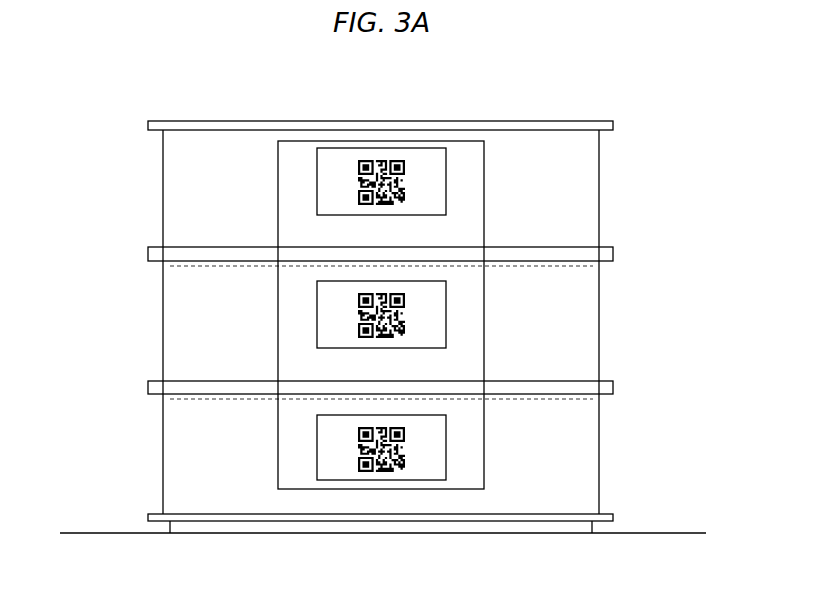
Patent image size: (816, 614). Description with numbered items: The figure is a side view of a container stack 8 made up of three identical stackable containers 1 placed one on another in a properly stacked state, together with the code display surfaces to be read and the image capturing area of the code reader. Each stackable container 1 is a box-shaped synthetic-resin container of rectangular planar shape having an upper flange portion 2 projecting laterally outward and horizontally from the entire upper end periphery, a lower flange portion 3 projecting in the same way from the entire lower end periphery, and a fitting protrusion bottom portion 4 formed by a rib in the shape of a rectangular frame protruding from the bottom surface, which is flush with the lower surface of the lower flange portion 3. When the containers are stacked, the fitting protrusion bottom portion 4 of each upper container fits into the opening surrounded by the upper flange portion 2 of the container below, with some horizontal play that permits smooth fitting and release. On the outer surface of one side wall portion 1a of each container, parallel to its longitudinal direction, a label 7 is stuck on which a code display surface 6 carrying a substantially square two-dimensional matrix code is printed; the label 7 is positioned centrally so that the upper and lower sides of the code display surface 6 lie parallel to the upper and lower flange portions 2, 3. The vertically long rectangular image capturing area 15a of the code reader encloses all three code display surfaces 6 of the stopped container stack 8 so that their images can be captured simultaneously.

The stackable container 1 is at (160, 188).
The side wall portion 1a is at (548, 231).
The upper flange portion 2 is at (545, 121).
The lower flange portion 3 is at (571, 247).
The fitting protrusion bottom portion 4 is at (290, 534).
The code display surface 6 is at (358, 180).
The label 7 is at (440, 188).
The container stack 8 is at (238, 118).
The image capturing area 15a is at (278, 208).